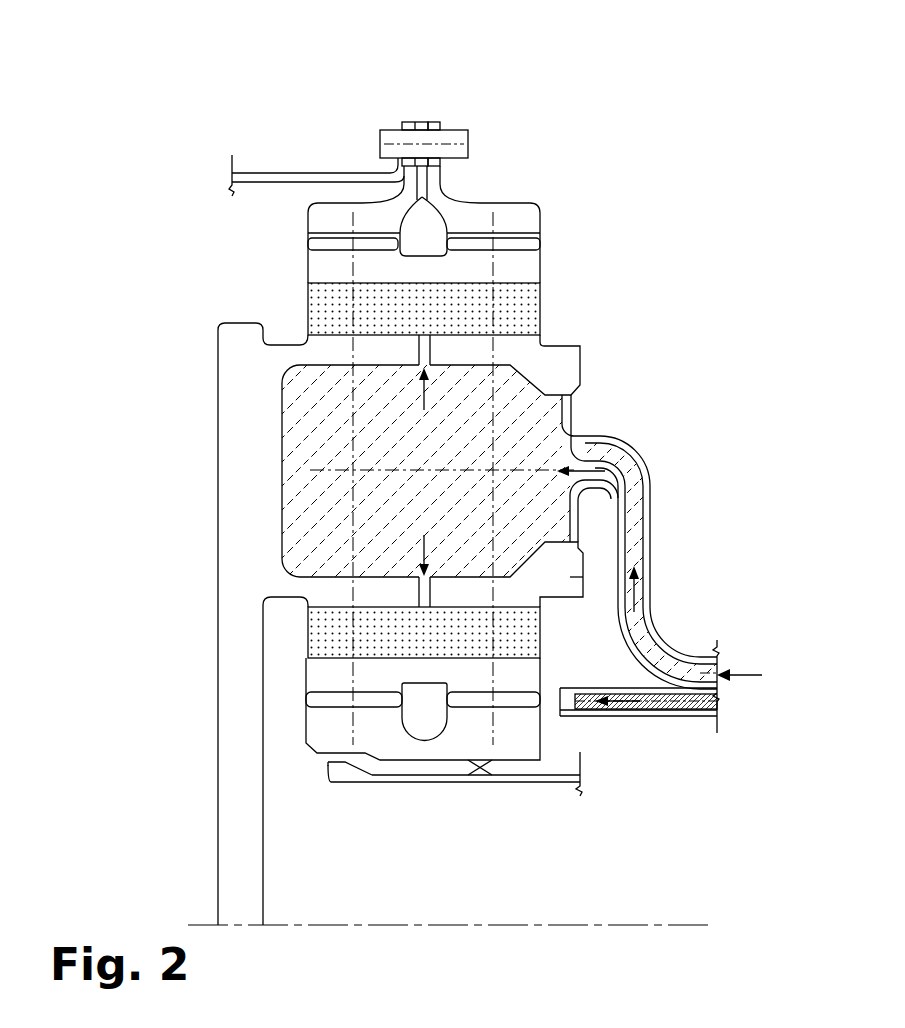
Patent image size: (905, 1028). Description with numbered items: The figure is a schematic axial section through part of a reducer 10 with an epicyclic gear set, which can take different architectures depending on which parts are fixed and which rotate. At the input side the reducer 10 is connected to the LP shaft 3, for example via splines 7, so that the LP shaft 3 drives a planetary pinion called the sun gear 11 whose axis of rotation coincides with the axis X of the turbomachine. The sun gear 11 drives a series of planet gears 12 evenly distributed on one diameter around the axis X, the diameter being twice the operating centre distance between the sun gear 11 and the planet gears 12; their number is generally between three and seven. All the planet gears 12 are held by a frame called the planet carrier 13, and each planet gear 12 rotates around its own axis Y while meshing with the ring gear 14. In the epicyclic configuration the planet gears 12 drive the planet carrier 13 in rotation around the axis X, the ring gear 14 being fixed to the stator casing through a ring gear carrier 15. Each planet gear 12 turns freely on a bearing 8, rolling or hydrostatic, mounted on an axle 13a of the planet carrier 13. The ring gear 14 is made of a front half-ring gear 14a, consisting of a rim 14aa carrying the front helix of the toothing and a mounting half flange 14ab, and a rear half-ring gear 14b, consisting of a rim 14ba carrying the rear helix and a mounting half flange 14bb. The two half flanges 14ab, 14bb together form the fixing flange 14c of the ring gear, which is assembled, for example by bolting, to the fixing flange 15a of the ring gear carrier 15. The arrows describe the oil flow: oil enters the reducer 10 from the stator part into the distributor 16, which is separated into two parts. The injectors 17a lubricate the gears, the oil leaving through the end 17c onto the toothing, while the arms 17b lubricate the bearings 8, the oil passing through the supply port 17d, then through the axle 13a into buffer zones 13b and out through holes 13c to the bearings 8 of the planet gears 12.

The LP shaft 3 is at (543, 782).
The splines 7 is at (403, 782).
The bearing 8 is at (527, 298).
The reducer 10 is at (673, 288).
The sun gear 11 is at (313, 725).
The planet gears 12 is at (317, 675).
The planet carrier 13 is at (583, 347).
The axle 13a is at (583, 577).
The buffer zone 13b is at (426, 471).
The holes 13c is at (432, 346).
The ring gear 14 is at (417, 141).
The front half-ring gear 14a is at (308, 221).
The rim 14aa is at (334, 212).
The mounting half flange 14ab is at (417, 120).
The rear half-ring gear 14b is at (540, 222).
The rim 14ba is at (480, 203).
The mounting half flange 14bb is at (430, 117).
The fixing flange 14c is at (444, 100).
The ring gear carrier 15 is at (270, 173).
The fixing flange 15a is at (402, 121).
The distributor 16 is at (722, 616).
The injector 17a is at (663, 710).
The arm 17b is at (644, 528).
The end 17c is at (587, 717).
The supply port 17d is at (567, 414).
The axis X is at (683, 925).
The axis Y is at (571, 450).